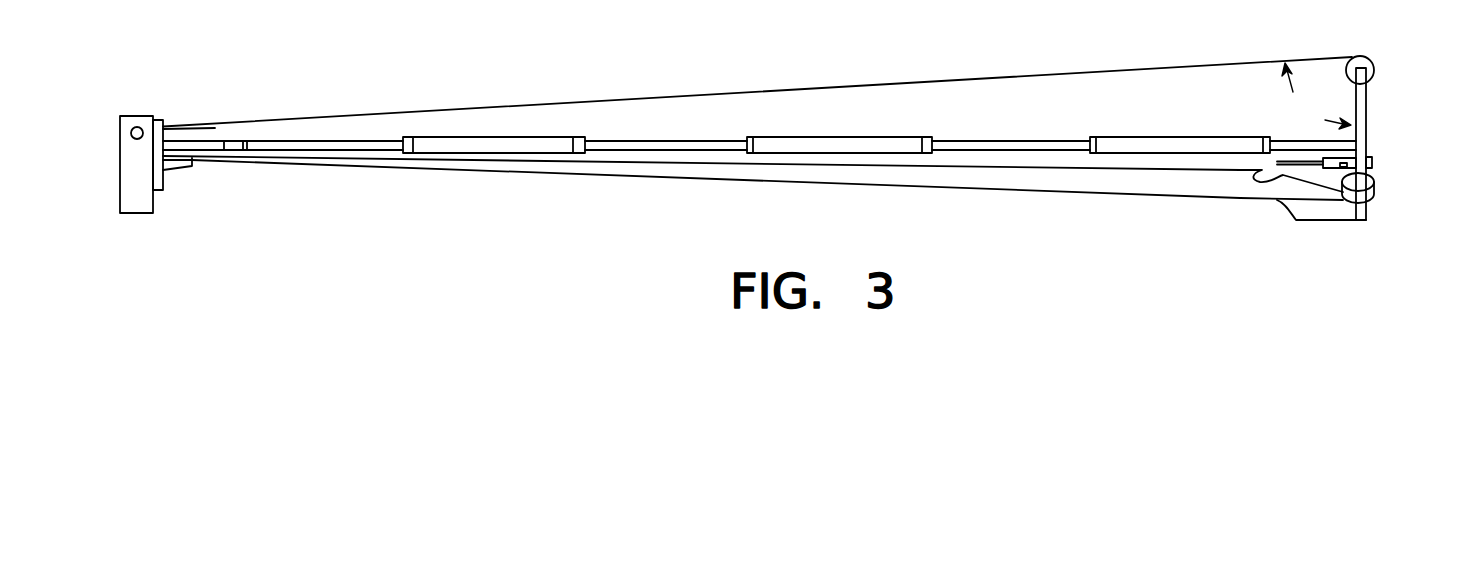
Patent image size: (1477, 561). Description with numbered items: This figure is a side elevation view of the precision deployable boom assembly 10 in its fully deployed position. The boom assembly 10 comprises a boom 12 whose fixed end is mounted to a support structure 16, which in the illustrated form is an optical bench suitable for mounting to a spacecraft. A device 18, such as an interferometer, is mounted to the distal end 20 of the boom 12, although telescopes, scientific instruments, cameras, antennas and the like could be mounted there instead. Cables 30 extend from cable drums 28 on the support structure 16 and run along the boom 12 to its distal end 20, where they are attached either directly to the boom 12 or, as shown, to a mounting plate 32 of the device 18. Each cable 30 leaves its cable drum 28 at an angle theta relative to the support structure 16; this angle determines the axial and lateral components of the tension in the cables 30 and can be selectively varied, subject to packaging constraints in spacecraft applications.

The boom assembly 10 is at (788, 130).
The boom 12 is at (759, 100).
The support structure 16 is at (1368, 107).
The device 18 is at (137, 119).
The distal end 20 is at (210, 146).
The cable drums 28 is at (1376, 66).
The cables 30 is at (1060, 74).
The mounting plate 32 is at (167, 181).